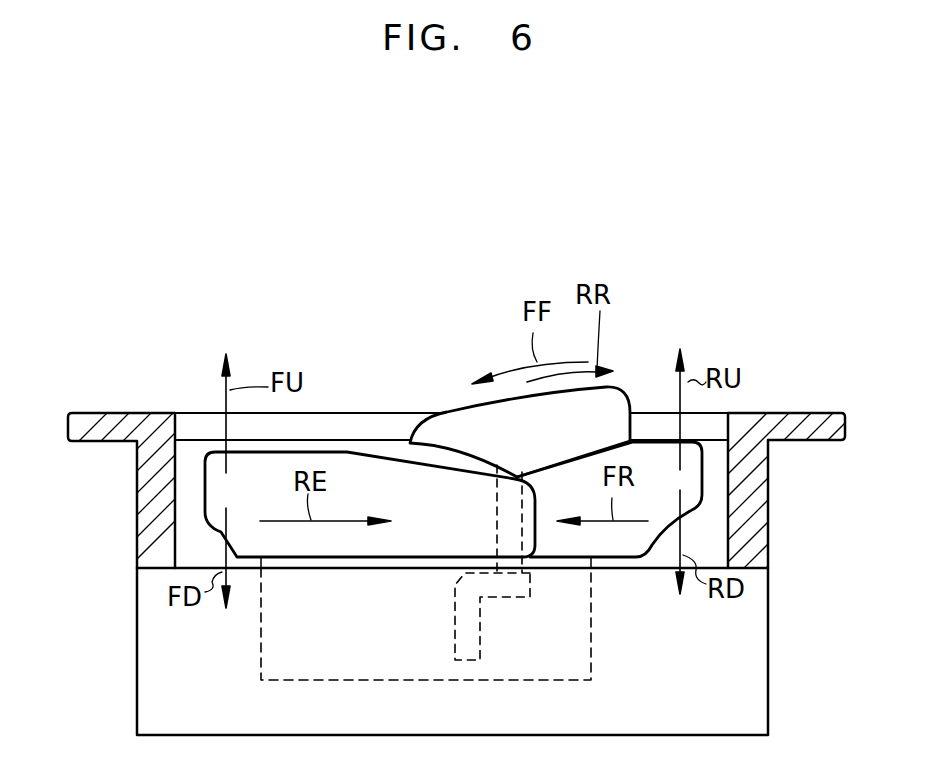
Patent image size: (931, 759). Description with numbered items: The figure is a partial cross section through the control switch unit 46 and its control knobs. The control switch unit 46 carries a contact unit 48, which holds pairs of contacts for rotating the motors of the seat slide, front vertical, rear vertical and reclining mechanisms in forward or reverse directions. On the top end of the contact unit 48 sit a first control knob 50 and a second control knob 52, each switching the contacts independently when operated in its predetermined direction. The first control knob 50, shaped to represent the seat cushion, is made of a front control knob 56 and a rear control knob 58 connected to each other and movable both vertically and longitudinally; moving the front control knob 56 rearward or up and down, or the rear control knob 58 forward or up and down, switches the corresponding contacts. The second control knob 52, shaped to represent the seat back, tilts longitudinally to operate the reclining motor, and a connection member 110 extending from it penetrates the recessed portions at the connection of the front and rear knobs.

The control switch unit 46 is at (100, 381).
The contact unit 48 is at (144, 685).
The first control knob 50 is at (453, 552).
The second control knob 52 is at (613, 397).
The front control knob 56 is at (445, 547).
The rear control knob 58 is at (613, 547).
The connection member 110 is at (528, 512).